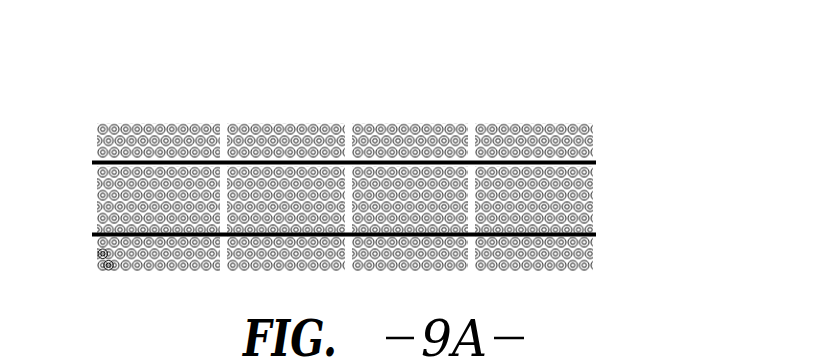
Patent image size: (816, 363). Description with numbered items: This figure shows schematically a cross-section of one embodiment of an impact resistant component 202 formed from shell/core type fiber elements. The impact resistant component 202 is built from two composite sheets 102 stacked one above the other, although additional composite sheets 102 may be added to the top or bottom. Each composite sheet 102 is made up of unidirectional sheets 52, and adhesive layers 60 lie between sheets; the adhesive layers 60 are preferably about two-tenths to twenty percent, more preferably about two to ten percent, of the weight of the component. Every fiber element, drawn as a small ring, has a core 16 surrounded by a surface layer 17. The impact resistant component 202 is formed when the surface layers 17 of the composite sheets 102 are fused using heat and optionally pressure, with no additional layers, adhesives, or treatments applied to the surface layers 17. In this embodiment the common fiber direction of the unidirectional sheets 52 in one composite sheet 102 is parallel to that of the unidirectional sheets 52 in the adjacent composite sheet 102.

The impact resistant component 202 is at (395, 161).
The composite sheet 102 is at (395, 191).
The unidirectional sheet 52 is at (599, 127).
The adhesive layer 60 is at (93, 162).
The core 16 is at (100, 262).
The surface layer 17 is at (113, 270).